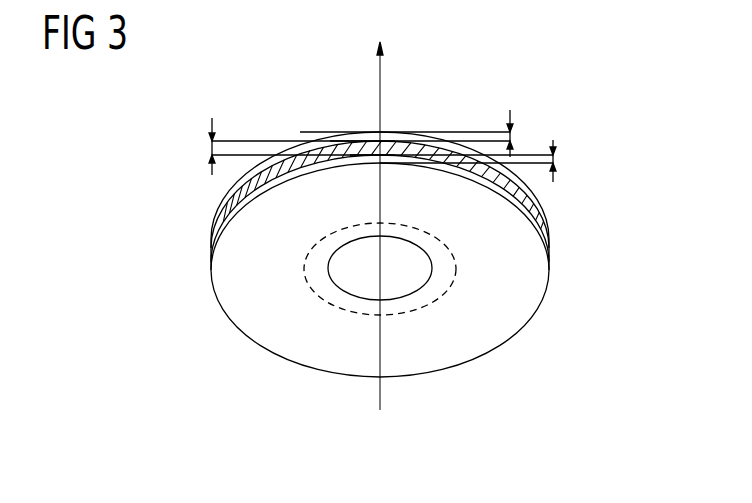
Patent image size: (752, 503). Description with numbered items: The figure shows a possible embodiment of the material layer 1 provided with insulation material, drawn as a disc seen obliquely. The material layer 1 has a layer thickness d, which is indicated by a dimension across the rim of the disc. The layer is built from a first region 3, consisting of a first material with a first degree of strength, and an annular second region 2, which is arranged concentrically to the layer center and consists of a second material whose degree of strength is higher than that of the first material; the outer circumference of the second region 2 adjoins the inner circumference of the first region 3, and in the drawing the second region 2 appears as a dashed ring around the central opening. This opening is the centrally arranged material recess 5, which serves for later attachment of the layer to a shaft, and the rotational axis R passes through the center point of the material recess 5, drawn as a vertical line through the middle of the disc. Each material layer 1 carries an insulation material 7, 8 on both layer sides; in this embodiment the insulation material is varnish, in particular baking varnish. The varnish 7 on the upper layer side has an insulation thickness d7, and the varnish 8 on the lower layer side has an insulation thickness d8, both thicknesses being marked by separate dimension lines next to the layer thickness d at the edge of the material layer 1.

The material layer 1 is at (228, 193).
The second region 2 is at (443, 278).
The first region 3 is at (545, 198).
The material recess 5 is at (402, 300).
The varnish 7 is at (358, 131).
The varnish 8 is at (397, 131).
The rotational axis R is at (380, 63).
The layer thickness d is at (210, 145).
The insulation thickness d7 is at (518, 134).
The insulation thickness d8 is at (560, 160).